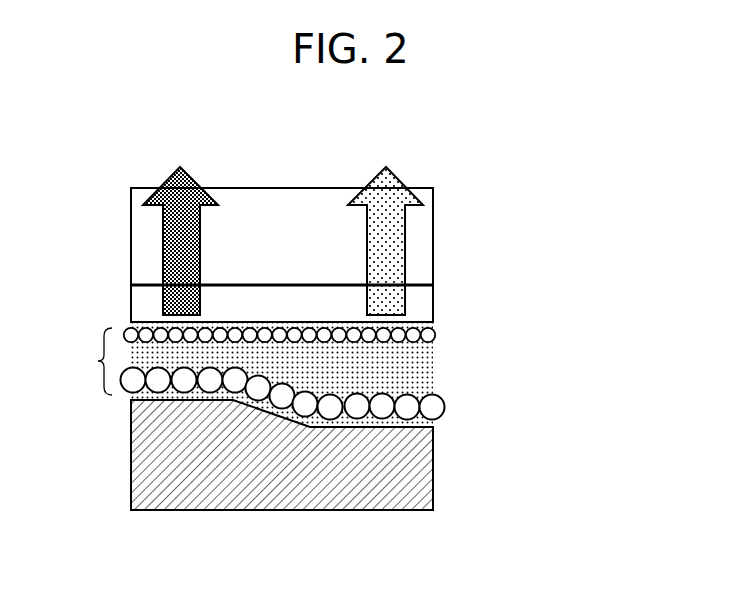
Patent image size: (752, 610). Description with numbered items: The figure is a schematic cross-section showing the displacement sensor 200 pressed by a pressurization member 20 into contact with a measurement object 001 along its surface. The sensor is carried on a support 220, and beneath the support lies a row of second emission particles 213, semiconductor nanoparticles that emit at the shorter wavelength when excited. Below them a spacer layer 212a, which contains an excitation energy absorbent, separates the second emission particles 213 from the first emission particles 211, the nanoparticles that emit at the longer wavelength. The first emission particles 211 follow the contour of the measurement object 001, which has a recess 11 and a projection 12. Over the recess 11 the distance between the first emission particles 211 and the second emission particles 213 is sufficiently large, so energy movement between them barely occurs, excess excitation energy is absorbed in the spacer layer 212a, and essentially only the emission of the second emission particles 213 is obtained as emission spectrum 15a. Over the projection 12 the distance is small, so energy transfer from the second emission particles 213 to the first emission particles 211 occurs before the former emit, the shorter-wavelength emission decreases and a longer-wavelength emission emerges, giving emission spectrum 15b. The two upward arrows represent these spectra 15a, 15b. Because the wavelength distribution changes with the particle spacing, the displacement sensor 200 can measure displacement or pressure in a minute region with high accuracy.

The pressurization member 20 is at (433, 222).
The support 220 is at (433, 301).
The second emission particles 213 is at (435, 337).
The spacer layer 212a is at (425, 367).
The first emission particles 211 is at (445, 407).
The recess 11 is at (368, 420).
The projection 12 is at (177, 398).
The measurement object 001 is at (433, 485).
The displacement sensor 200 is at (80, 361).
The emission spectrum 15a is at (397, 189).
The emission spectrum 15b is at (193, 189).